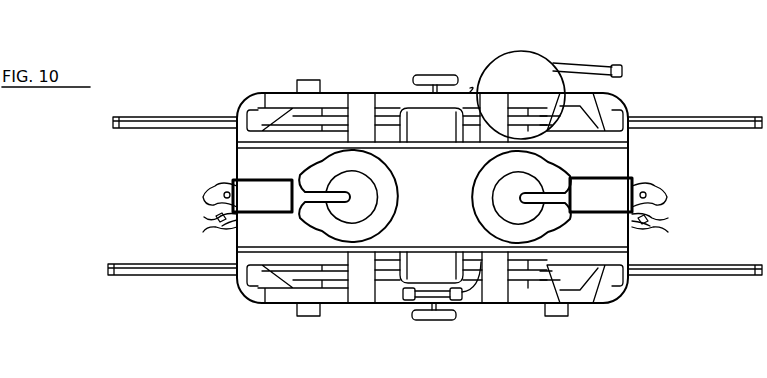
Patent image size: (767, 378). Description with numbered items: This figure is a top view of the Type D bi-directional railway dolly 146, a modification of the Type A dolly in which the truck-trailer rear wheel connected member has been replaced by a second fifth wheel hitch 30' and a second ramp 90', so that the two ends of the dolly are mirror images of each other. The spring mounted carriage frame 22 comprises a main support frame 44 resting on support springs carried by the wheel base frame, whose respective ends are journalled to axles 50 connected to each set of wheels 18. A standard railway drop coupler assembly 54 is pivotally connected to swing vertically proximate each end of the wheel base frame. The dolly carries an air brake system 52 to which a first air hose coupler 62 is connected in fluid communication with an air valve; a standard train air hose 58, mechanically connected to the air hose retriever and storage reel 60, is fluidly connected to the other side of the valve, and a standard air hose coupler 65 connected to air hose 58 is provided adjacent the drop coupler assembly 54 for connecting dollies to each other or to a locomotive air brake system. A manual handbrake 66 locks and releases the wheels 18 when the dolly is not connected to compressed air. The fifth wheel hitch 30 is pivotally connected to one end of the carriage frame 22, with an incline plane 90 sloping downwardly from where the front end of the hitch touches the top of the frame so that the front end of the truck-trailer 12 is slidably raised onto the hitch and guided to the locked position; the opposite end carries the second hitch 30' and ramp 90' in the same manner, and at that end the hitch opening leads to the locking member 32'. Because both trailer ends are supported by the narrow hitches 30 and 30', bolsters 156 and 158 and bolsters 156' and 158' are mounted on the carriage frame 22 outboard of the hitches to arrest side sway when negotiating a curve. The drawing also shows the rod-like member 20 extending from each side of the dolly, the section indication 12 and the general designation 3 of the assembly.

The connector assembly 3 is at (448, 184).
The truck-trailer 12 is at (423, 63).
The wheels 18 is at (282, 140).
The guide rod 20 is at (160, 114).
The spring mounted carriage frame 22 is at (470, 88).
The fifth wheel hitch 30 is at (505, 197).
The second fifth wheel hitch 30' is at (362, 196).
The clamp ring bore 32' is at (374, 197).
The main support frame 44 is at (623, 97).
The axles 50 is at (309, 80).
The air brake system 52 is at (445, 135).
The railway drop coupler assembly 54 is at (207, 191).
The standard train air hose 58 is at (583, 62).
The air hose retriever and storage reel 60 is at (511, 53).
The first air hose coupler 62 is at (623, 69).
The standard air hose coupler 65 is at (203, 232).
The manual handbrake 66 is at (411, 78).
The incline plane 90 is at (452, 200).
The second ramp 90' is at (411, 198).
The bi-directional railway dolly 146 is at (288, 57).
The bolster 156 is at (511, 104).
The bolster 156' is at (377, 99).
The bolster 158 is at (510, 289).
The bolster 158' is at (351, 289).